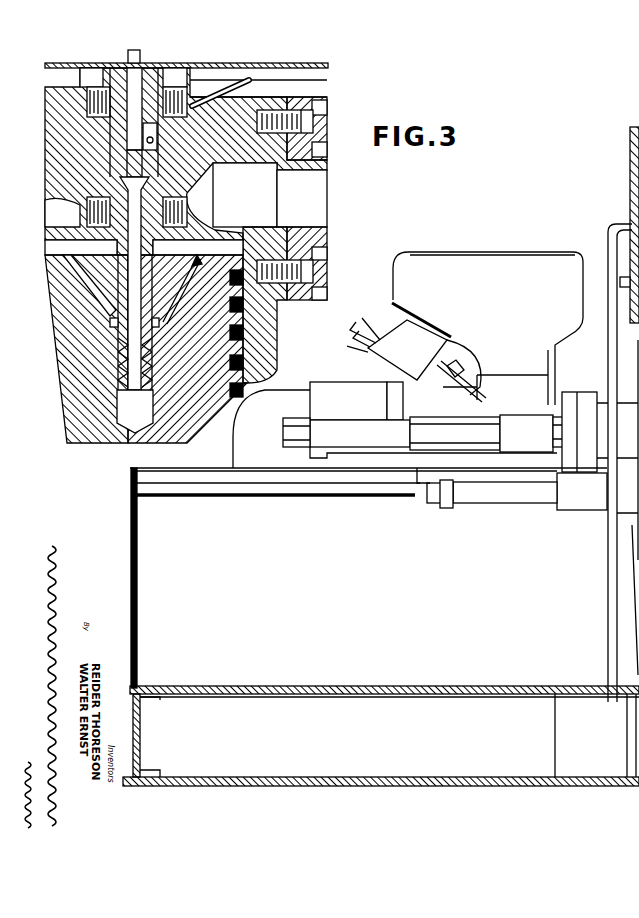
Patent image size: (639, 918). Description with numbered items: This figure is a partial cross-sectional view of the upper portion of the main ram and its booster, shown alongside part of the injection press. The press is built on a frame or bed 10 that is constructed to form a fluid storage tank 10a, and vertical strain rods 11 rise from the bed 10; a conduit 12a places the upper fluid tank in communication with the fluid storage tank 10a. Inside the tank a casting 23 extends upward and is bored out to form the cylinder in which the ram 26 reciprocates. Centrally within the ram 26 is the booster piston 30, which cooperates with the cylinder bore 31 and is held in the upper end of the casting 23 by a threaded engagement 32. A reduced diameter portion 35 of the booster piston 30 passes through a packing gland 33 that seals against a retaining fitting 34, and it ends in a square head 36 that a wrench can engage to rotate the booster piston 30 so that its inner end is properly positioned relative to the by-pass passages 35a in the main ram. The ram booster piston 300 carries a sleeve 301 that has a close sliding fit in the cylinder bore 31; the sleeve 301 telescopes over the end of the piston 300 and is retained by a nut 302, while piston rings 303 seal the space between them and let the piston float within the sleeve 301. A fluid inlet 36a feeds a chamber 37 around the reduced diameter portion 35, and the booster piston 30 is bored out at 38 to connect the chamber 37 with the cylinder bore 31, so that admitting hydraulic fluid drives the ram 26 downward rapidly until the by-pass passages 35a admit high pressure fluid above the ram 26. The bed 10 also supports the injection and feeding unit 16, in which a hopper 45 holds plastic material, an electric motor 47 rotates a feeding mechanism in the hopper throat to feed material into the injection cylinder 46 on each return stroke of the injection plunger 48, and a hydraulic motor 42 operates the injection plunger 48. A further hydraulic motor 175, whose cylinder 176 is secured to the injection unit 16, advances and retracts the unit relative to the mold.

The frame or bed 10 is at (545, 687).
The fluid storage tank 10a is at (585, 715).
The strain rods 11 is at (629, 401).
The conduit 12a is at (607, 597).
The injection and feeding unit 16 is at (393, 267).
The casting 23 is at (75, 152).
The ram 26 is at (70, 410).
The booster piston 30 is at (153, 252).
The cylinder bore 31 is at (150, 400).
The threaded engagement 32 is at (196, 195).
The packing gland 33 is at (80, 117).
The retaining fitting 34 is at (80, 92).
The reduced diameter portion 35 is at (150, 66).
The by-pass passages 35a is at (190, 281).
The square head 36 is at (139, 58).
The fluid inlet 36a is at (258, 77).
The chamber 37 is at (160, 165).
The bore 38 is at (125, 245).
The hydraulic motor 42 is at (260, 452).
The hopper 45 is at (500, 263).
The injection cylinder 46 is at (637, 410).
The electric motor 47 is at (391, 320).
The injection plunger 48 is at (457, 432).
The hydraulic motor 175 is at (605, 510).
The cylinder 176 is at (577, 503).
The ram booster piston 300 is at (120, 343).
The sleeve 301 is at (117, 376).
The nut 302 is at (135, 411).
The piston rings 303 is at (120, 360).